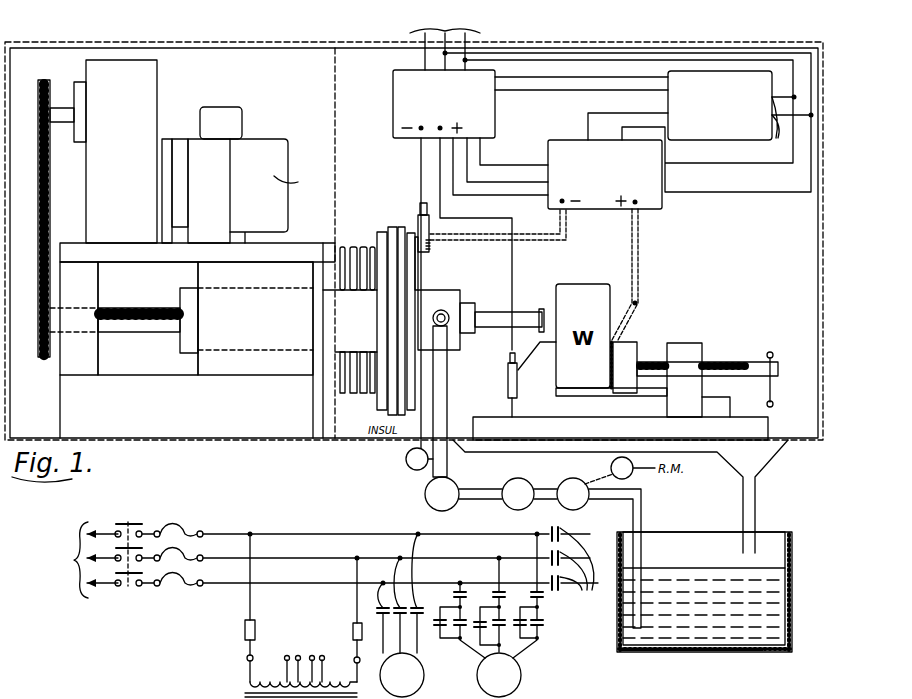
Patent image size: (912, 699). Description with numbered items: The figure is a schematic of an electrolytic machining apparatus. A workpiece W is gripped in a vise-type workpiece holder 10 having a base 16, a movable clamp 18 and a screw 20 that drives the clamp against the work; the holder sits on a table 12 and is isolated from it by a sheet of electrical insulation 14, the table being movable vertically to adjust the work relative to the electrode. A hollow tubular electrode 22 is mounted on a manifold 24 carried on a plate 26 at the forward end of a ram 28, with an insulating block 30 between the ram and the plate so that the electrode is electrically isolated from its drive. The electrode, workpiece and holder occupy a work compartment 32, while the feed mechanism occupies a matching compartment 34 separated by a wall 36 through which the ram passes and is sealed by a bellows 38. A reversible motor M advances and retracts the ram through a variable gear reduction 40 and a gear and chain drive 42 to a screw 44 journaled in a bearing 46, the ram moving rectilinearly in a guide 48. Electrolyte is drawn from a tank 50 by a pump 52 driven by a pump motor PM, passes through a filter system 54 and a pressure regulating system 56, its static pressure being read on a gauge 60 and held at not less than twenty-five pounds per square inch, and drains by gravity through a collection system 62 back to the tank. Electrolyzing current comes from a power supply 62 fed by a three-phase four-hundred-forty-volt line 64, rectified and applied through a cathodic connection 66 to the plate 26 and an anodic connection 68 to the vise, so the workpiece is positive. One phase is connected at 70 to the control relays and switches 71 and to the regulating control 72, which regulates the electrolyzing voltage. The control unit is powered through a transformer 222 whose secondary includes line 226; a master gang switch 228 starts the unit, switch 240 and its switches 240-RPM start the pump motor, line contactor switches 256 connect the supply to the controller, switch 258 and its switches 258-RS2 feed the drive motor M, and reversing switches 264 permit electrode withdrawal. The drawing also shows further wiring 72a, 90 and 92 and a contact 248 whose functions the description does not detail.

The workpiece holder 10 is at (690, 328).
The table 12 is at (760, 428).
The sheet of electrical insulation 14 is at (668, 412).
The base 16 is at (716, 405).
The movable clamp 18 is at (633, 342).
The screw 20 is at (724, 366).
The electrode 22 is at (525, 318).
The manifold 24 is at (432, 291).
The plate 26 is at (411, 232).
The ram 28 is at (308, 352).
The insulating block 30 is at (392, 392).
The work compartment 32 is at (744, 233).
The compartment 34 is at (288, 97).
The wall 36 is at (335, 122).
The bellows 38 is at (352, 247).
The variable gear reduction 40 is at (133, 190).
The gear and chain drive 42 is at (49, 194).
The screw 44 is at (133, 330).
The bearing 46 is at (68, 376).
The guide 48 is at (232, 375).
The tank 50 is at (792, 598).
The pump 52 is at (568, 479).
The filter system 54 is at (509, 481).
The pressure regulating system 56 is at (425, 488).
The gauge 60 is at (406, 459).
The collection system and power supply 62 is at (393, 78).
The three-phase line 64 is at (410, 31).
The cathodic connection 66 is at (421, 152).
The anodic connection 68 is at (512, 284).
The connection 70 is at (252, 600).
The control circuit relays and switches 71 is at (732, 137).
The regulating control 72 is at (566, 142).
The control wiring 72a is at (695, 192).
The workpiece lead 90 is at (639, 251).
The sensor lead 92 is at (566, 243).
The transformer 222 is at (242, 694).
The line 226 is at (799, 695).
The master gang switch 228 is at (130, 521).
The pump motor switch 240 is at (378, 615).
The relay contact 248 is at (664, 695).
The line contactor switches 256 is at (582, 568).
The drive motor switch 258 is at (488, 615).
The reversing switches 264 is at (520, 631).